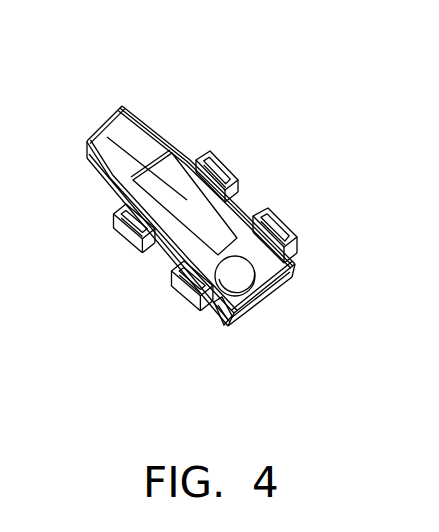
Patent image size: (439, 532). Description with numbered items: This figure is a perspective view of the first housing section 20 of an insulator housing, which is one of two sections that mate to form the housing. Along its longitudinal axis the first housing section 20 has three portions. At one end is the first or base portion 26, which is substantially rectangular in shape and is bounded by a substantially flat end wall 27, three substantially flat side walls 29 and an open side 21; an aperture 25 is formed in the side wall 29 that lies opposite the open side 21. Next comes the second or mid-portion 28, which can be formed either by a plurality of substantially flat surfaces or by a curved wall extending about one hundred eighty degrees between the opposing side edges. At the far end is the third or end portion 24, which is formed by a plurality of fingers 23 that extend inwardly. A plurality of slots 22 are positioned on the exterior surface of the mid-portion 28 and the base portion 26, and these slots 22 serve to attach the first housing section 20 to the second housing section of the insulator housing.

The first housing section 20 is at (163, 108).
The open side 21 is at (186, 202).
The slots 22 is at (225, 150).
The fingers 23 is at (126, 106).
The end portion 24 is at (105, 130).
The aperture 25 is at (232, 276).
The base portion 26 is at (293, 276).
The end wall 27 is at (250, 313).
The mid-portion 28 is at (154, 257).
The side walls 29 is at (222, 326).